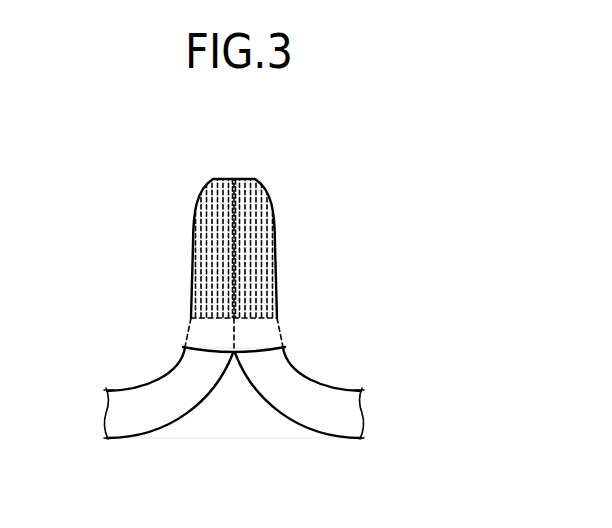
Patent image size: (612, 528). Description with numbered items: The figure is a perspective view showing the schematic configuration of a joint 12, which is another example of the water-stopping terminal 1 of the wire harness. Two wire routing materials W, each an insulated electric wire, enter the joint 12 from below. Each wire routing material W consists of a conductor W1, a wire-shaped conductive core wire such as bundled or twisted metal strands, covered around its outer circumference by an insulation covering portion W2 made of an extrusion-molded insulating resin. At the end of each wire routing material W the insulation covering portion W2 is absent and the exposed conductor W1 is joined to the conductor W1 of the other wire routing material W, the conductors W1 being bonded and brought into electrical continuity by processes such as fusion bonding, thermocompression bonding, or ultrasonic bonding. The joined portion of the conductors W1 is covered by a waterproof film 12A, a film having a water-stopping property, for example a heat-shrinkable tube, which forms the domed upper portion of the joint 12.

The water-stopping terminal 1 is at (274, 281).
The joint 12 is at (274, 281).
The waterproof film 12A is at (265, 178).
The conductor W1 is at (198, 241).
The wire routing material W is at (144, 362).
The insulation covering portion W2 is at (164, 430).